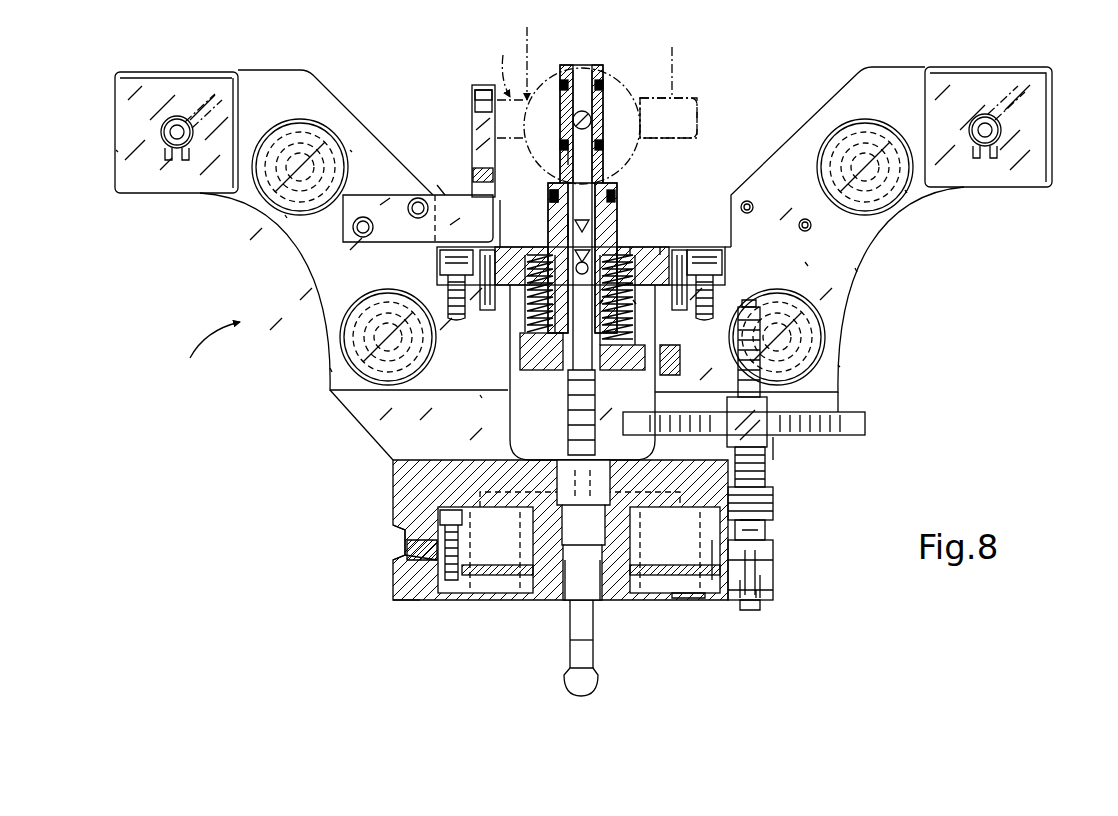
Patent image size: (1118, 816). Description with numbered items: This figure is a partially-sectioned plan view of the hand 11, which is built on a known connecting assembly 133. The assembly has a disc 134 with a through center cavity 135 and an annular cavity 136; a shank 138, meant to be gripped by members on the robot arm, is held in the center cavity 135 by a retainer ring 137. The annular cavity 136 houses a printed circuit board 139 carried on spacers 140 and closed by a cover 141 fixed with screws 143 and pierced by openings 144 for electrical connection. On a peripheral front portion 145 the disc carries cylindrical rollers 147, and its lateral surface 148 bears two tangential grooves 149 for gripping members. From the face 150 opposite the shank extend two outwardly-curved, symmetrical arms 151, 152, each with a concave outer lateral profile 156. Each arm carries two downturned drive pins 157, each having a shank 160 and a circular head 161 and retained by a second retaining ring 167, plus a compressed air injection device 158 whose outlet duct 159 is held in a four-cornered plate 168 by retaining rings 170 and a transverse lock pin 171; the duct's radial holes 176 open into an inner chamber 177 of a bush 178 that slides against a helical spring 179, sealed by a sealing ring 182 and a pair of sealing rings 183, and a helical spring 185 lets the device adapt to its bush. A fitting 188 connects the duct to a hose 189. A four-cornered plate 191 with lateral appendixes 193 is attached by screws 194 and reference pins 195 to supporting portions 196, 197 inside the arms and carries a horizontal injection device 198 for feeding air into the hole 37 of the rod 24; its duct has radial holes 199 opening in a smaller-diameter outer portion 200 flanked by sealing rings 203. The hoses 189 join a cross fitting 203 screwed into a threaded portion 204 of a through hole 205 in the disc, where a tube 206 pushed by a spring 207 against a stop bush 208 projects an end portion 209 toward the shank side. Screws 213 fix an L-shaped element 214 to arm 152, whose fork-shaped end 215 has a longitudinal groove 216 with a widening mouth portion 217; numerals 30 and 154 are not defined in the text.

The hand 11 is at (201, 362).
The rod 24 is at (520, 57).
The reference line 30 is at (592, 82).
The hole 37 is at (580, 62).
The connecting assembly 133 is at (600, 648).
The disc 134 is at (420, 495).
The center cavity 135 is at (606, 565).
The annular cavity 136 is at (712, 545).
The retainer ring 137 is at (655, 580).
The shank 138 is at (575, 585).
The printed circuit board 139 is at (498, 585).
The spacers 140 is at (415, 575).
The cover 141 is at (478, 600).
The screws 143 is at (455, 600).
The openings 144 is at (688, 600).
The peripheral front portion 145 is at (403, 604).
The cylindrical rollers 147 is at (566, 660).
The lateral surface 148 is at (780, 515).
The tangential grooves 149 is at (395, 543).
The face 150 is at (420, 440).
The arm 151 is at (800, 150).
The arm 152 is at (352, 152).
The holes 154 is at (776, 216).
The concave outer lateral profile 156 is at (858, 272).
The drive pins 157 is at (287, 218).
The compressed air injection device 158 is at (114, 150).
The outlet duct 159 is at (668, 118).
The shank 160 is at (340, 347).
The circular head 161 is at (370, 335).
The second retaining ring 167 is at (744, 367).
The four-cornered plate 168 is at (127, 108).
The retaining rings 170 is at (172, 152).
The transverse lock pin 171 is at (208, 78).
The radial holes 176 is at (604, 250).
The inner chamber 177 is at (605, 213).
The bush 178 is at (566, 225).
The helical spring 179 is at (548, 371).
The sealing ring 182 is at (548, 192).
The sealing rings 183 is at (640, 330).
The helical spring 185 is at (636, 305).
The fitting 188 is at (180, 125).
The hose 189 is at (175, 118).
The four-cornered plate 191 is at (655, 247).
The lateral appendixes 193 is at (505, 360).
The screws 194 is at (440, 262).
The reference pins 195 is at (487, 312).
The supporting portion 196 is at (728, 247).
The supporting portion 197 is at (495, 247).
The injection device 198 is at (700, 247).
The radial holes 199 is at (588, 112).
The smaller-diameter outer portion 200 is at (568, 135).
The sealing rings / cross fitting 203 is at (592, 115).
The threaded portion 204 is at (766, 468).
The through hole 205 is at (764, 582).
The tube 206 is at (775, 572).
The spring 207 is at (774, 500).
The stop bush 208 is at (738, 605).
The end portion 209 is at (760, 588).
The screws 213 is at (365, 240).
The L-shaped element 214 is at (436, 190).
The fork-shaped end 215 is at (478, 166).
The longitudinal groove 216 is at (480, 125).
The mouth portion 217 is at (482, 92).